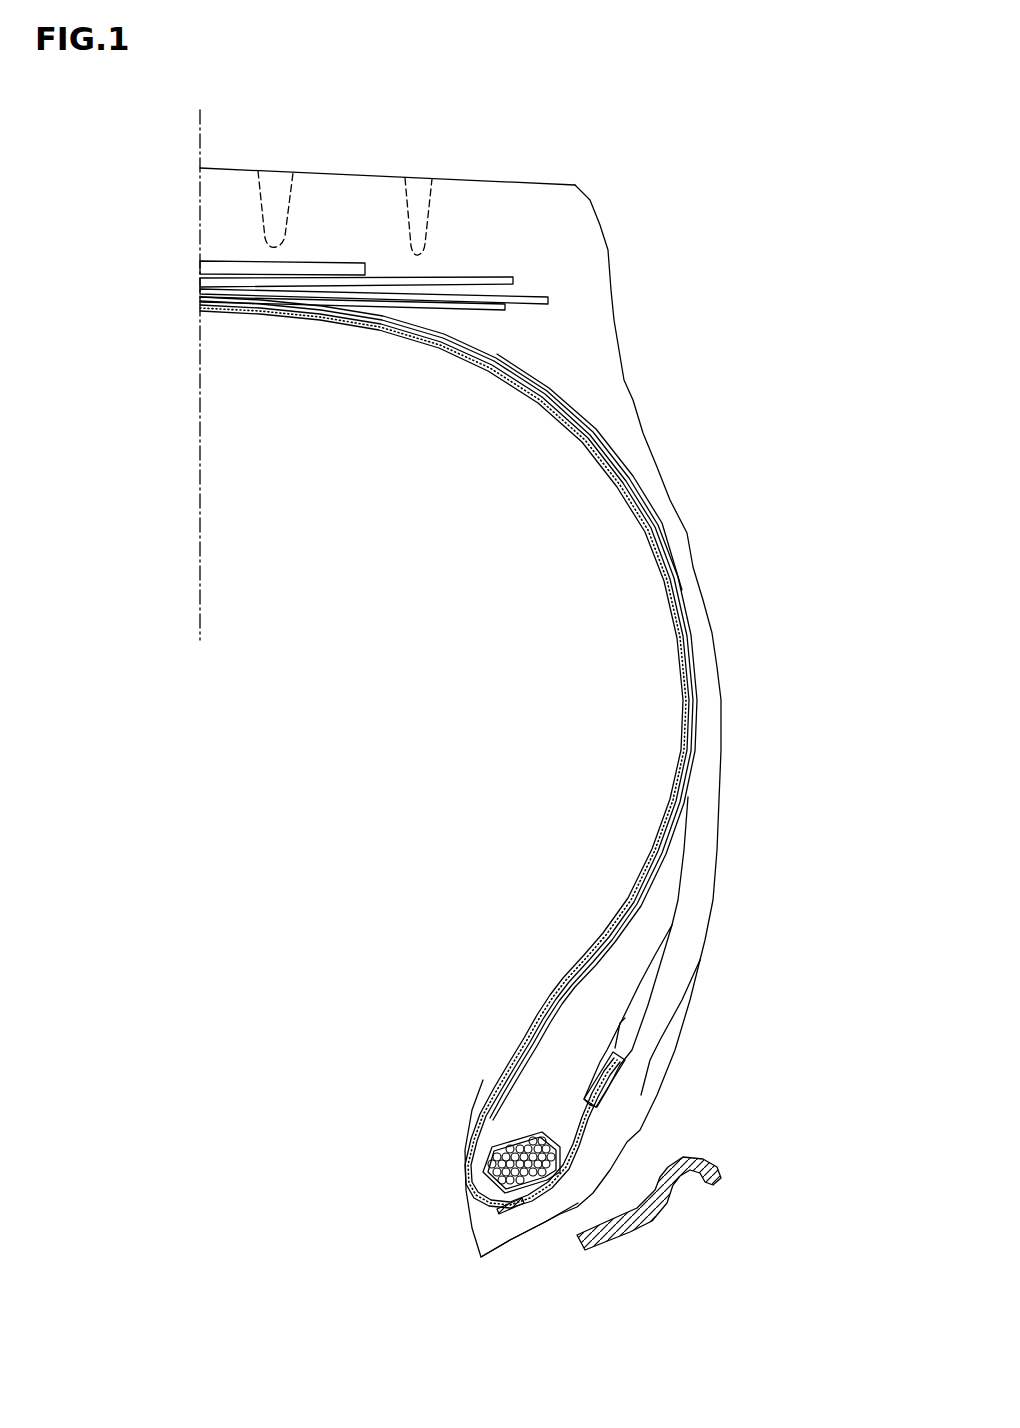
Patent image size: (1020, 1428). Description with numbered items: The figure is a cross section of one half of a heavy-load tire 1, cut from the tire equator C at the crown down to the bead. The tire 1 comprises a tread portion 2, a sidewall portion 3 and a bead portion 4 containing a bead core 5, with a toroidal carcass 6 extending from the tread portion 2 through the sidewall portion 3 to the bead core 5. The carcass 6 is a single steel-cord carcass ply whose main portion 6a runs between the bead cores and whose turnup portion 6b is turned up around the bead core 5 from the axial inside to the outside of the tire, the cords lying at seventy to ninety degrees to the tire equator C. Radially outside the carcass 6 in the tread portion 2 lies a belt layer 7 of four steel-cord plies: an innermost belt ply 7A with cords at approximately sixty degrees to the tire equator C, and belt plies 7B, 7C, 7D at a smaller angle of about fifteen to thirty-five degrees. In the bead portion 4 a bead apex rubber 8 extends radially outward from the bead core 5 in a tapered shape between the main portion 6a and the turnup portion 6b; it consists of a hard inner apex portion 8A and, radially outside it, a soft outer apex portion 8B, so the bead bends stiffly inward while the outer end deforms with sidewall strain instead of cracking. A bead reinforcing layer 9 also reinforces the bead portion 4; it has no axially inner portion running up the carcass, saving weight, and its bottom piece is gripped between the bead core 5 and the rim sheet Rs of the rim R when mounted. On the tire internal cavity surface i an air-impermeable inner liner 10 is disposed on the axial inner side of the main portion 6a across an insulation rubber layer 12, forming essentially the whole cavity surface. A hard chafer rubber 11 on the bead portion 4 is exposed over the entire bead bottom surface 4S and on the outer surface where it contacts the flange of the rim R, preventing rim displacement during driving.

The heavy-load tire 1 is at (515, 683).
The tread portion 2 is at (470, 152).
The sidewall portion 3 is at (745, 600).
The bead portion 4 is at (513, 1129).
The bead bottom surface 4S is at (551, 1222).
The bead core 5 is at (493, 1168).
The carcass 6 is at (448, 752).
The main portion 6a is at (525, 1062).
The turnup portion 6b is at (576, 1092).
The belt layer 7 is at (306, 273).
The innermost belt ply 7A is at (306, 311).
The belt ply 7B is at (200, 291).
The belt ply 7C is at (200, 279).
The belt ply 7D is at (200, 265).
The bead apex rubber 8 is at (526, 1001).
The hard inner apex portion 8A is at (560, 1125).
The soft outer apex portion 8B is at (643, 932).
The bead reinforcing layer 9 is at (517, 1212).
The inner liner 10 is at (652, 847).
The chafer rubber 11 is at (640, 1097).
The insulation rubber layer 12 is at (683, 748).
The tire internal cavity surface i is at (673, 640).
The tire equator C is at (200, 363).
The rim sheet Rs is at (597, 1250).
The rim R is at (645, 1245).